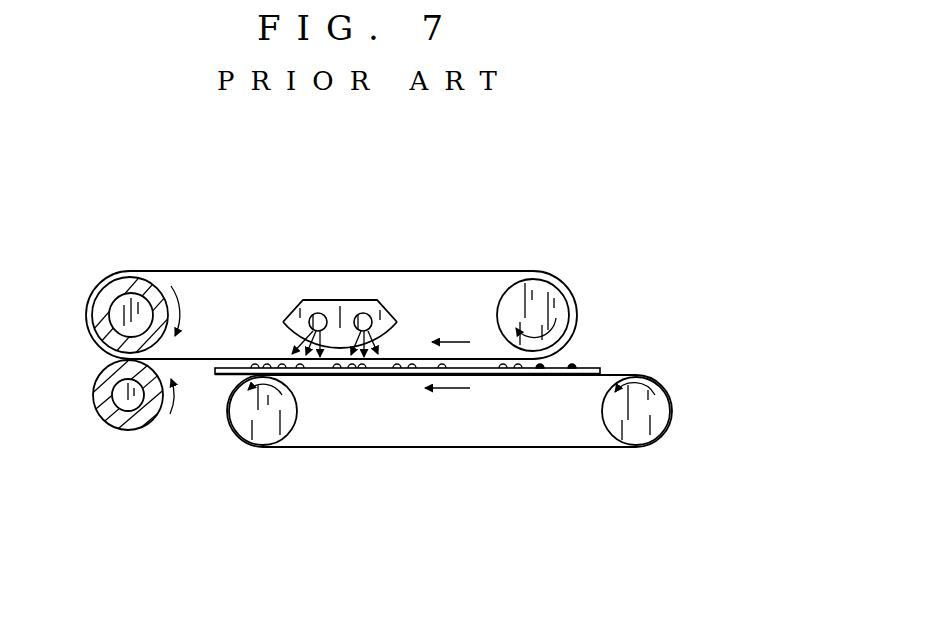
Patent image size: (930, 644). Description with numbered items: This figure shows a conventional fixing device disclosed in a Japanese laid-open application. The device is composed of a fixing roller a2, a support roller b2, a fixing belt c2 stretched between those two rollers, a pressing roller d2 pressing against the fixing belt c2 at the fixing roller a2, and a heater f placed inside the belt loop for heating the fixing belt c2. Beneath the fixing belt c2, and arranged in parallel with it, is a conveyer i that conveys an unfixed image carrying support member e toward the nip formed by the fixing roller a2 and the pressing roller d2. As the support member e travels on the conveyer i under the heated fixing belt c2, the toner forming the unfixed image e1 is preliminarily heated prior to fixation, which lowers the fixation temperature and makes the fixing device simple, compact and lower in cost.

The fixing roller a2 is at (124, 282).
The support roller b2 is at (520, 317).
The fixing belt c2 is at (440, 271).
The pressing roller d2 is at (112, 427).
The unfixed image carrying support member e is at (560, 375).
The unfixed image e1 is at (540, 368).
The heater f is at (352, 298).
The conveyer i is at (391, 447).